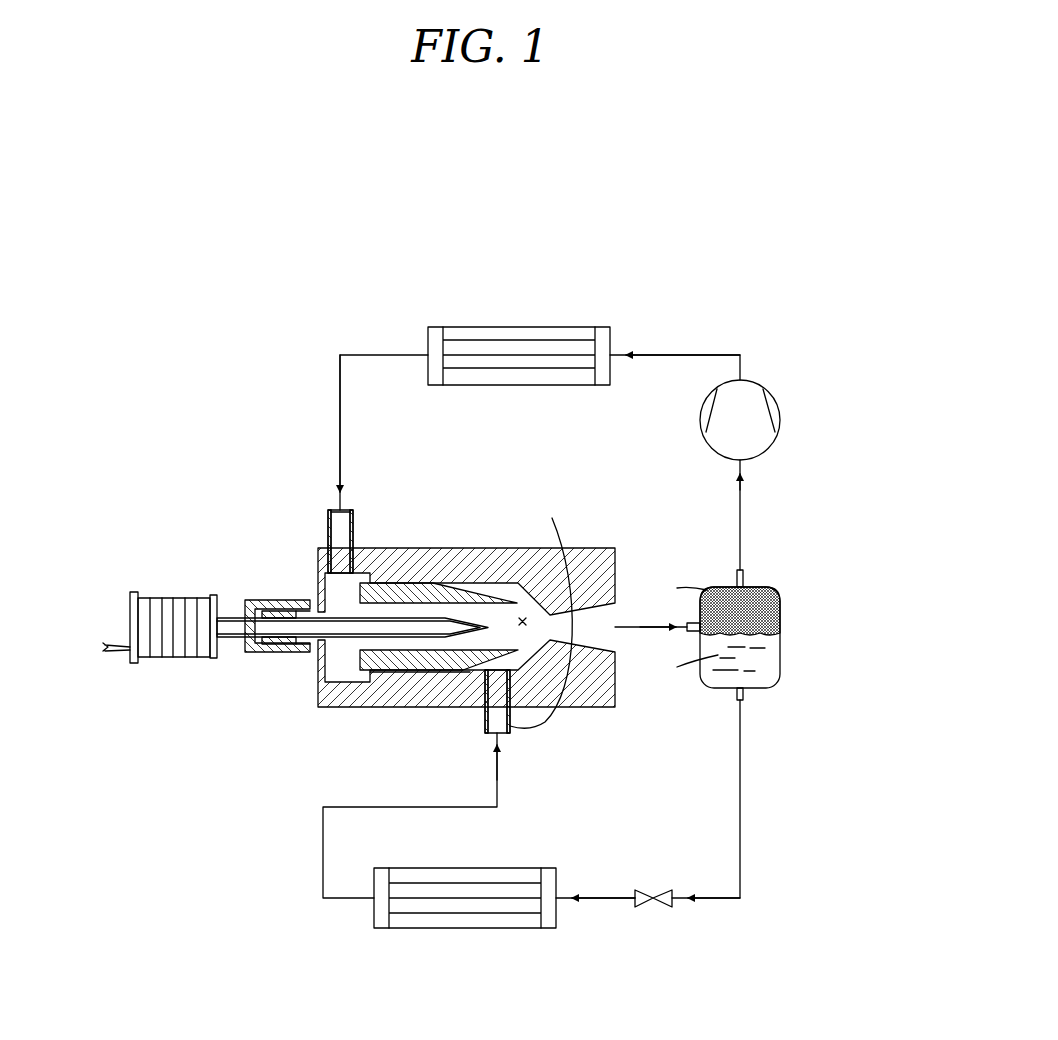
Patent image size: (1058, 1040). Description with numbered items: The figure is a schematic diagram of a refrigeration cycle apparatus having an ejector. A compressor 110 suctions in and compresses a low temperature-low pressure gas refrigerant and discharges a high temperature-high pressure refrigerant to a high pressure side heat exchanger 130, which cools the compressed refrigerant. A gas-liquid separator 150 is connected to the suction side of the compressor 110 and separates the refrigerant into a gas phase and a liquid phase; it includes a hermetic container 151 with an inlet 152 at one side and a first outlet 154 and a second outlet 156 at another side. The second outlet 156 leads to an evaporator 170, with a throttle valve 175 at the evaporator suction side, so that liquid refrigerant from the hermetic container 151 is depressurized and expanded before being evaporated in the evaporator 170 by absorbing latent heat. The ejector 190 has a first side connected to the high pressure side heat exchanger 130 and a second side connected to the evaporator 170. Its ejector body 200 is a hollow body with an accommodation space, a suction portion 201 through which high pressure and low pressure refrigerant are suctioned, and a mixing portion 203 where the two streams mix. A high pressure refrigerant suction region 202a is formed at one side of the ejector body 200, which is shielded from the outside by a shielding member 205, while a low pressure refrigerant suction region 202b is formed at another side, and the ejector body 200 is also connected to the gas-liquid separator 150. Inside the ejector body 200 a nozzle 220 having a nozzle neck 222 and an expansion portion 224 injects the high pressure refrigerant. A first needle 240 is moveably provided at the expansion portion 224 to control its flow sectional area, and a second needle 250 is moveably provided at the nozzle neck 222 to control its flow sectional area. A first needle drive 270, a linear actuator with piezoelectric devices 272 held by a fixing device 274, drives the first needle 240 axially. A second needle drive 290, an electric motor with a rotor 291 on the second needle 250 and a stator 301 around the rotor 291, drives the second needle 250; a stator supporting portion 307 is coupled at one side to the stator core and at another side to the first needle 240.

The compressor 110 is at (773, 398).
The high pressure side heat exchanger 130 is at (527, 325).
The gas-liquid separator 150 is at (853, 555).
The hermetic container 151 is at (782, 612).
The inlet 152 is at (782, 635).
The first outlet 154 is at (746, 575).
The second outlet 156 is at (746, 694).
The evaporator 170 is at (442, 930).
The throttle valve 175 is at (660, 905).
The ejector 190 is at (218, 506).
The ejector body 200 is at (437, 566).
The suction portion 201 is at (563, 427).
The high pressure refrigerant suction region 202a is at (356, 508).
The low pressure refrigerant suction region 202b is at (552, 518).
The mixing portion 203 is at (522, 616).
The shielding member 205 is at (325, 552).
The nozzle 220 is at (387, 690).
The nozzle neck 222 is at (445, 652).
The expansion portion 224 is at (482, 656).
The first needle 240 is at (232, 616).
The second needle 250 is at (338, 601).
The first needle drive 270 is at (95, 519).
The piezoelectric device 272 is at (152, 597).
The fixing device 274 is at (135, 592).
The second needle drive 290 is at (197, 749).
The rotor 291 is at (305, 653).
The stator 301 is at (272, 650).
The stator supporting portion 307 is at (247, 652).